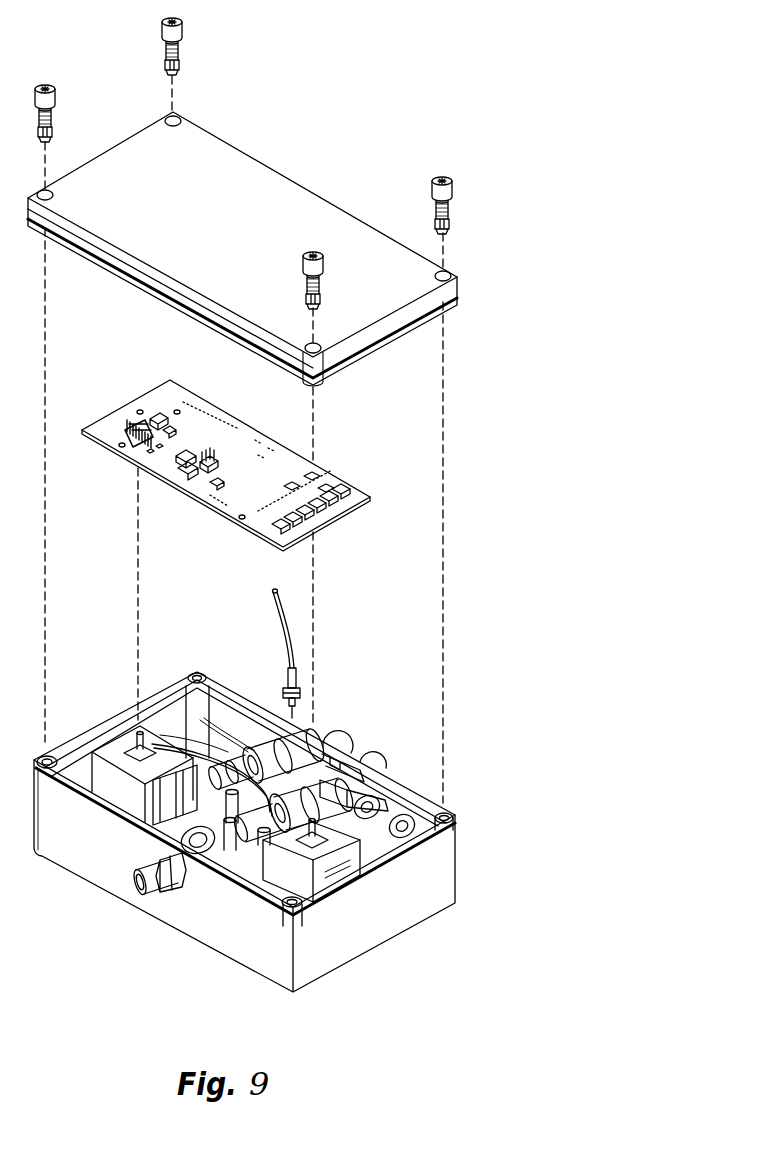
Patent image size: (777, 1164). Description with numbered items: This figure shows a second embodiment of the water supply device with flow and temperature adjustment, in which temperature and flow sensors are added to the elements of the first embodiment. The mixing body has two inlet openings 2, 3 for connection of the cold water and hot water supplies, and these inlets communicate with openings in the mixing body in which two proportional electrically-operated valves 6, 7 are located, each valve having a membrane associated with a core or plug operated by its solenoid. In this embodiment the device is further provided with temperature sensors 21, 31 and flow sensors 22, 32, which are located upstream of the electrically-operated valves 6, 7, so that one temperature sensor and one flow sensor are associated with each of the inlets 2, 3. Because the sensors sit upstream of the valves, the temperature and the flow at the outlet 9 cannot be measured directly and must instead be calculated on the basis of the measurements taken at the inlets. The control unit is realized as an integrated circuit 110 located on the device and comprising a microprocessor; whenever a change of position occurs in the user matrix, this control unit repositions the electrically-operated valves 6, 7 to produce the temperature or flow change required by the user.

The integrated circuit 110 is at (333, 497).
The temperature sensor 21 is at (296, 752).
The flow sensor 22 is at (262, 790).
The inlet opening 2 is at (330, 733).
The inlet opening 3 is at (366, 750).
The temperature sensor 31 is at (325, 755).
The flow sensor 32 is at (320, 775).
The proportional electrically-operated valve 7 is at (112, 790).
The outlet 9 is at (143, 884).
The proportional electrically-operated valve 6 is at (353, 836).